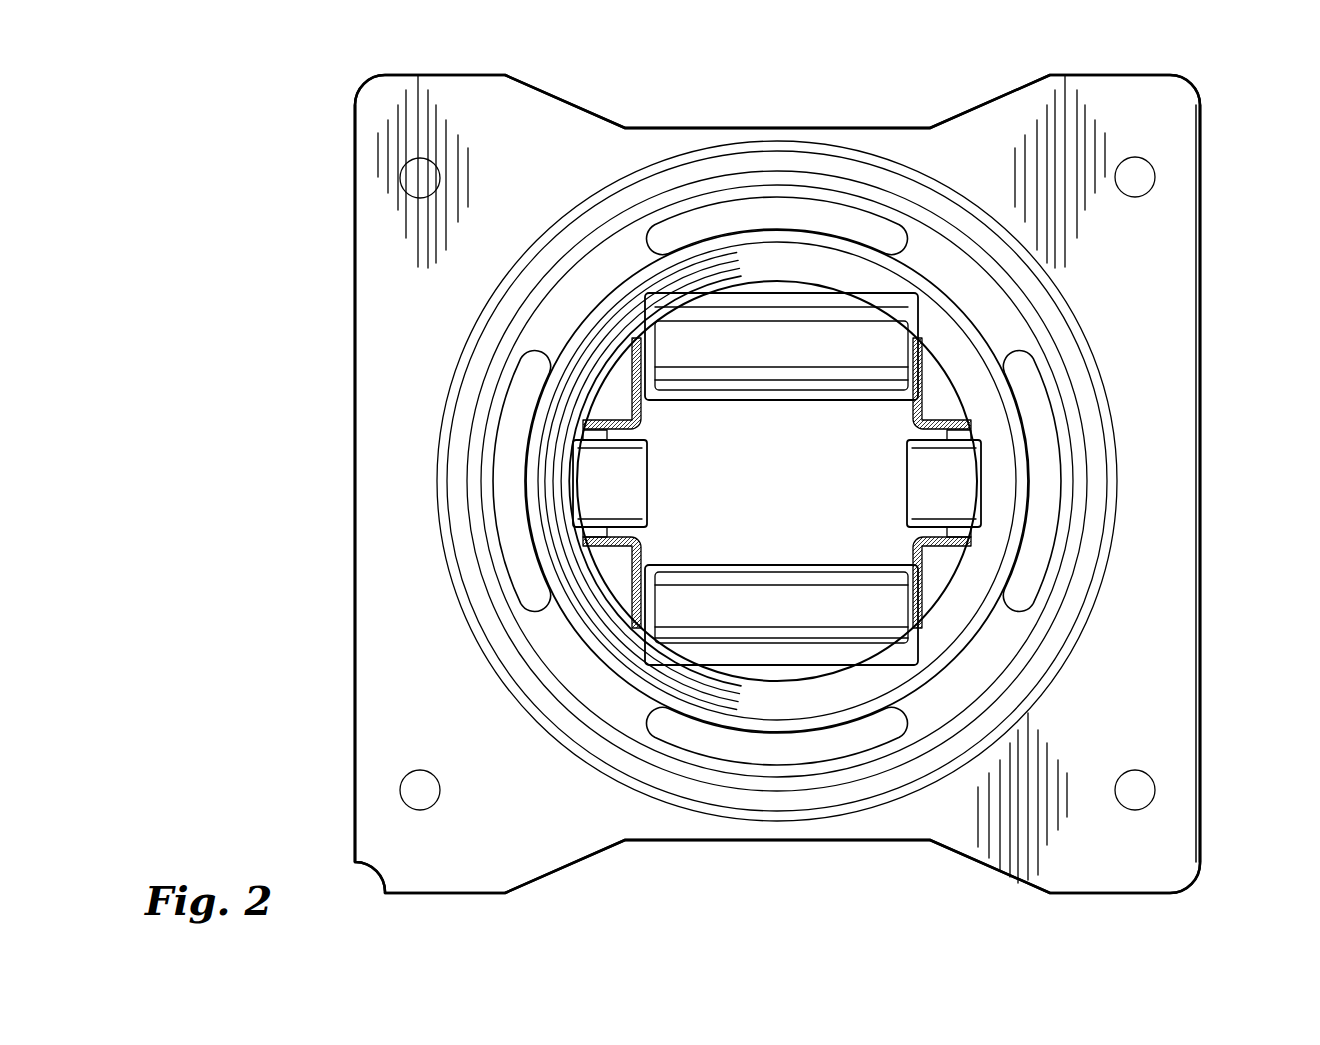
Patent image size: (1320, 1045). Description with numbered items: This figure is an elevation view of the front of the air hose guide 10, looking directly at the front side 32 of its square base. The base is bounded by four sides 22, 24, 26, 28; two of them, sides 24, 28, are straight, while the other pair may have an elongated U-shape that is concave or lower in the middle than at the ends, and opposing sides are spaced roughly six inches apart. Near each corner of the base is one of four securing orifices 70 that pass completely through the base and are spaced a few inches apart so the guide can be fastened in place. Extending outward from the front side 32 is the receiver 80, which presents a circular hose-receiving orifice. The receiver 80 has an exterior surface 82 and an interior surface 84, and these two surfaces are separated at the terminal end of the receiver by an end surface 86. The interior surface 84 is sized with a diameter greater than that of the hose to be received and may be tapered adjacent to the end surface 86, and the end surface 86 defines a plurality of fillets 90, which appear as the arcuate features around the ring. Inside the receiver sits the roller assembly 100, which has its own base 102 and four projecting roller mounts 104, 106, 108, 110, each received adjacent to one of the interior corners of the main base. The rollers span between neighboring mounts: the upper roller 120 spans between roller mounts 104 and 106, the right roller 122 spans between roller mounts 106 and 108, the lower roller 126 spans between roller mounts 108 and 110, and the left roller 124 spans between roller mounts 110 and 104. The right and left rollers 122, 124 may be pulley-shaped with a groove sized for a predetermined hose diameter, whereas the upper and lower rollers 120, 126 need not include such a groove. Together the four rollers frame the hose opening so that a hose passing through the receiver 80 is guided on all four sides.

The air hose guide 10 is at (340, 76).
The side 22 is at (800, 128).
The side 24 is at (1208, 465).
The side 26 is at (785, 842).
The side 28 is at (352, 450).
The front side 32 is at (1003, 160).
The securing orifices 70 is at (415, 193).
The receiver 80 is at (637, 157).
The exterior surface 82 is at (582, 762).
The interior surface 84 is at (745, 673).
The end surface 86 is at (943, 690).
The fillets 90 is at (703, 213).
The roller assembly 100 is at (890, 543).
The base 102 is at (633, 547).
The roller mount 104 is at (625, 405).
The roller mount 106 is at (927, 400).
The roller mount 108 is at (933, 583).
The roller mount 110 is at (627, 578).
The upper roller 120 is at (815, 402).
The right roller 122 is at (908, 482).
The left roller 124 is at (647, 482).
The lower roller 126 is at (745, 563).